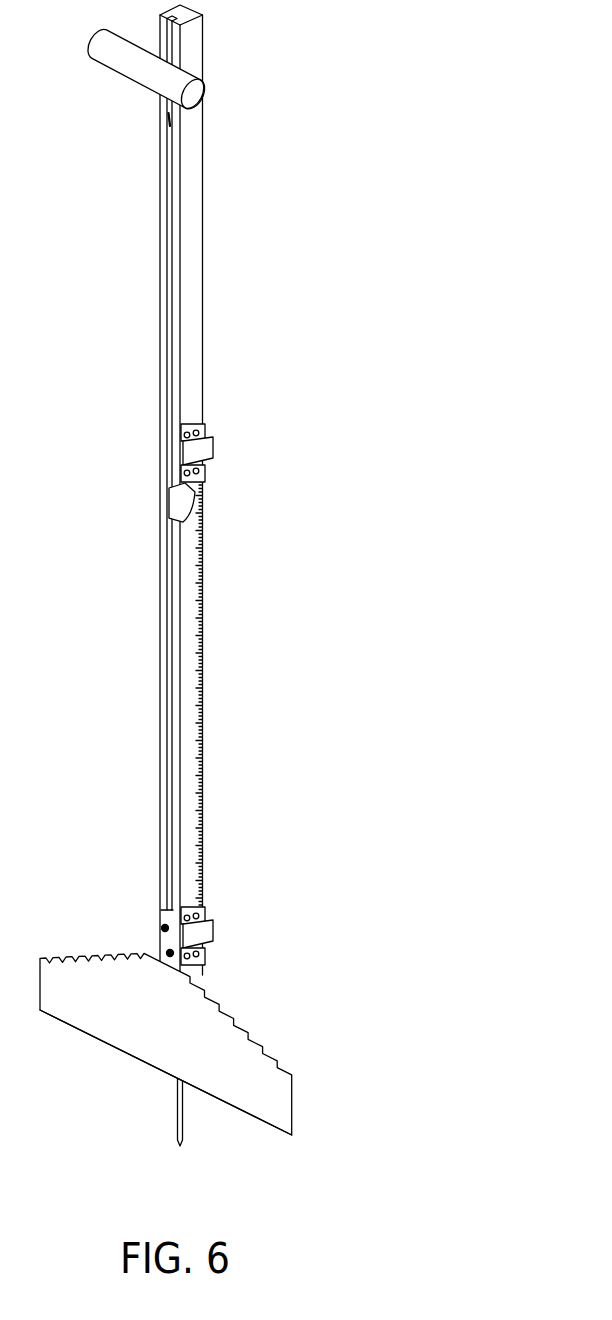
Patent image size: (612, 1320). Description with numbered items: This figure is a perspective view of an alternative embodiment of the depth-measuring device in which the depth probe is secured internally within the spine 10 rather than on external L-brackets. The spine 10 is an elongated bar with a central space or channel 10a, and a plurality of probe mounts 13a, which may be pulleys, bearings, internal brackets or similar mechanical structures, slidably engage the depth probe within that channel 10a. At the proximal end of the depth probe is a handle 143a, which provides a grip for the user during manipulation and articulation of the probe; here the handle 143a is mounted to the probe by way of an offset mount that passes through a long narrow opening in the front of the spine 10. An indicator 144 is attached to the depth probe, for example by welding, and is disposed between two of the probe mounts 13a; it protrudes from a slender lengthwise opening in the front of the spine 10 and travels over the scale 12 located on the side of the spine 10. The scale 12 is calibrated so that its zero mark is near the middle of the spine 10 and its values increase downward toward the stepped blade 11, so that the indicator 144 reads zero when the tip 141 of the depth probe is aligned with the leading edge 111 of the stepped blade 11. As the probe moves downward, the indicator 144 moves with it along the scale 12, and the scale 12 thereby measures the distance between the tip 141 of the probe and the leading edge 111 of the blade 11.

The spine 10 is at (195, 262).
The central channel of the spine 10a is at (173, 153).
The stepped blade 11 is at (243, 1045).
The leading edge of the stepped blade 111 is at (237, 1108).
The scale 12 is at (203, 647).
The probe mounts 13a is at (203, 444).
The tip of the depth probe 141 is at (177, 1107).
The handle 143a is at (199, 92).
The indicator 144 is at (168, 500).